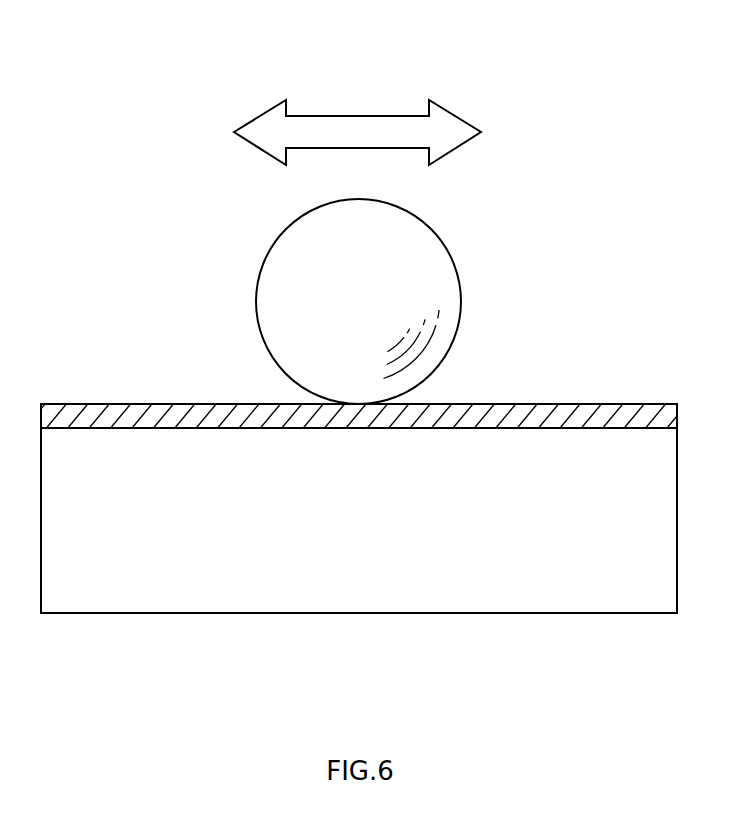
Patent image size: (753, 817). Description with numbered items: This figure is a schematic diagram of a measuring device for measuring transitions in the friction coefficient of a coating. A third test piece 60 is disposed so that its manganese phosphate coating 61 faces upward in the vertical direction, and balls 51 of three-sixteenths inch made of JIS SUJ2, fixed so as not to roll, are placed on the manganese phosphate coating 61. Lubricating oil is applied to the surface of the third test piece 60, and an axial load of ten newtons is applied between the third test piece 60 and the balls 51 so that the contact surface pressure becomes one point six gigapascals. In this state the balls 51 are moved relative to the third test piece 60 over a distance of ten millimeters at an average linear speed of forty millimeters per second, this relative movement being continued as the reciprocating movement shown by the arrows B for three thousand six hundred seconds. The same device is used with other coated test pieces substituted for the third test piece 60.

The arrows B is at (372, 122).
The balls 51 is at (287, 252).
The third test piece 60 is at (142, 410).
The manganese phosphate coating 61 is at (215, 604).